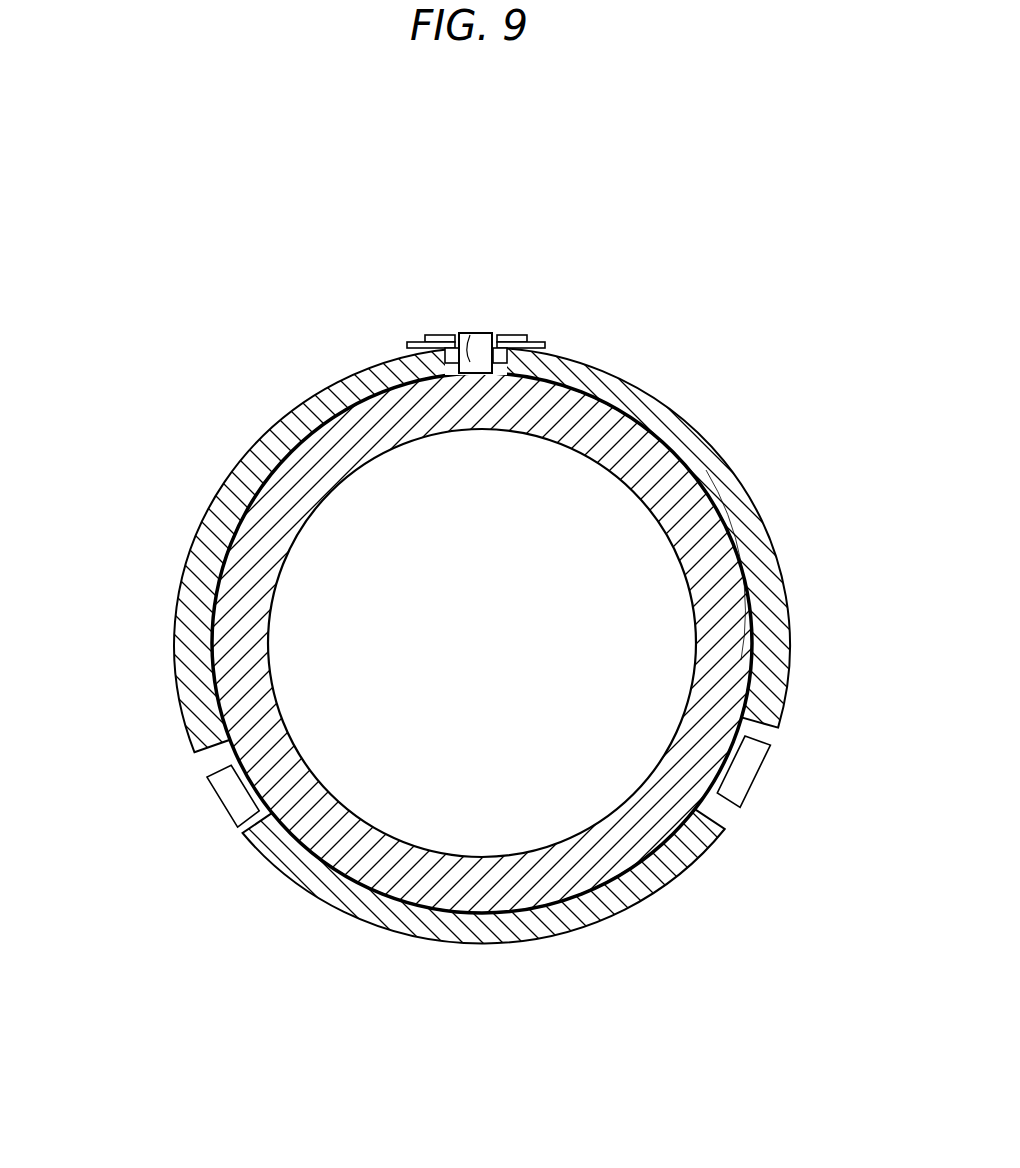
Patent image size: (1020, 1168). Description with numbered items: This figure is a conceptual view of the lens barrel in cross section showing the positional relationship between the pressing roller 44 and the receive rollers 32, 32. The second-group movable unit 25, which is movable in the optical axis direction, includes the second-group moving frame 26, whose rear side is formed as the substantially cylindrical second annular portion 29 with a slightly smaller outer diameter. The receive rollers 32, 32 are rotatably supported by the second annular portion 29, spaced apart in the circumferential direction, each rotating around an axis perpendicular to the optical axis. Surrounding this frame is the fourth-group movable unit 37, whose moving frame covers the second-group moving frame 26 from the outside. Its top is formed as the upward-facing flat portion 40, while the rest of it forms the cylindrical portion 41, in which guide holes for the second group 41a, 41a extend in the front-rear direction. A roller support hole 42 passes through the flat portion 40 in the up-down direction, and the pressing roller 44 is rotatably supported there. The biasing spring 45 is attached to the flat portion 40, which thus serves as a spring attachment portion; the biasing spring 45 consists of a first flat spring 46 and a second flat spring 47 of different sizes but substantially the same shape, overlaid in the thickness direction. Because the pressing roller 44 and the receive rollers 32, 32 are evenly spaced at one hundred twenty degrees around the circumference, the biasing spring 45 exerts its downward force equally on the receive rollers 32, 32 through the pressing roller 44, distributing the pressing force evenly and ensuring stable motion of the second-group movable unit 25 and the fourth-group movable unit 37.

The second-group movable unit 25 is at (600, 396).
The second-group moving frame 26 is at (645, 441).
The second annular portion 29 is at (705, 462).
The receive roller 32 is at (220, 765).
The fourth-group movable unit 37 is at (465, 646).
The flat portion 40 is at (545, 342).
The cylindrical portion 41 is at (220, 487).
The guide hole for the second group 41a is at (243, 820).
The roller support hole 42 is at (462, 333).
The pressing roller 44 is at (483, 333).
The biasing spring 45 is at (465, 249).
The first flat spring 46 is at (466, 263).
The second flat spring 47 is at (452, 332).